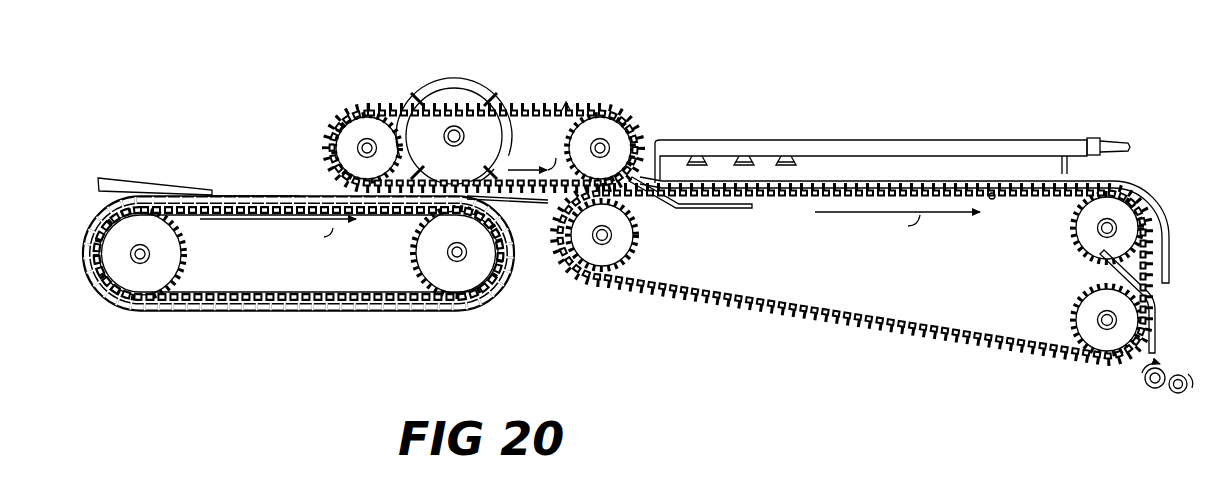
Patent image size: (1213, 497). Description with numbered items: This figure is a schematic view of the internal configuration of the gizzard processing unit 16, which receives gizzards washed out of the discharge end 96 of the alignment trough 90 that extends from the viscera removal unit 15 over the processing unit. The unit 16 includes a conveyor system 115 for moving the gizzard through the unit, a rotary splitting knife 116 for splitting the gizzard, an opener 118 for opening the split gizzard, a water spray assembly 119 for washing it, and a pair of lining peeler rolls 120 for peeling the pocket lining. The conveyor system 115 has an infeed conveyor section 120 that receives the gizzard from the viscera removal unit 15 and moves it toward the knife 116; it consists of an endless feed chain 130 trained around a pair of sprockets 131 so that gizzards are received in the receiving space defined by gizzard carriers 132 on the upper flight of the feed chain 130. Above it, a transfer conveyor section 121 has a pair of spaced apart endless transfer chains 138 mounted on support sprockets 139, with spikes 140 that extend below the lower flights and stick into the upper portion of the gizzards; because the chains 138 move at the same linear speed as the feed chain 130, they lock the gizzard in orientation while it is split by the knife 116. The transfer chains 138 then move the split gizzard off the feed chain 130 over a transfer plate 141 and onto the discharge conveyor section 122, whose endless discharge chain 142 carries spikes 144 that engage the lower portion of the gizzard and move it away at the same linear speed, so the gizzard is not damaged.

The viscera removal unit 15 is at (84, 173).
The gizzard processing unit 16 is at (862, 206).
The alignment trough 90 is at (123, 177).
The discharge end 96 is at (220, 178).
The conveyor system 115 is at (479, 194).
The rotary splitting knife 116 is at (462, 64).
The opener 118 is at (663, 203).
The water spray assembly 119 is at (813, 139).
The infeed conveyor section 120 is at (638, 285).
The transfer conveyor section 121 is at (571, 86).
The discharge conveyor section 122 is at (852, 275).
The endless feed chain 130 is at (205, 213).
The sprockets 131 is at (181, 262).
The gizzard carriers 132 is at (357, 178).
The endless transfer chains 138 is at (576, 110).
The support sprockets 139 is at (339, 153).
The spikes 140 is at (540, 110).
The transfer plate 141 is at (532, 201).
The endless discharge chain 142 is at (789, 201).
The spikes 144 is at (992, 201).